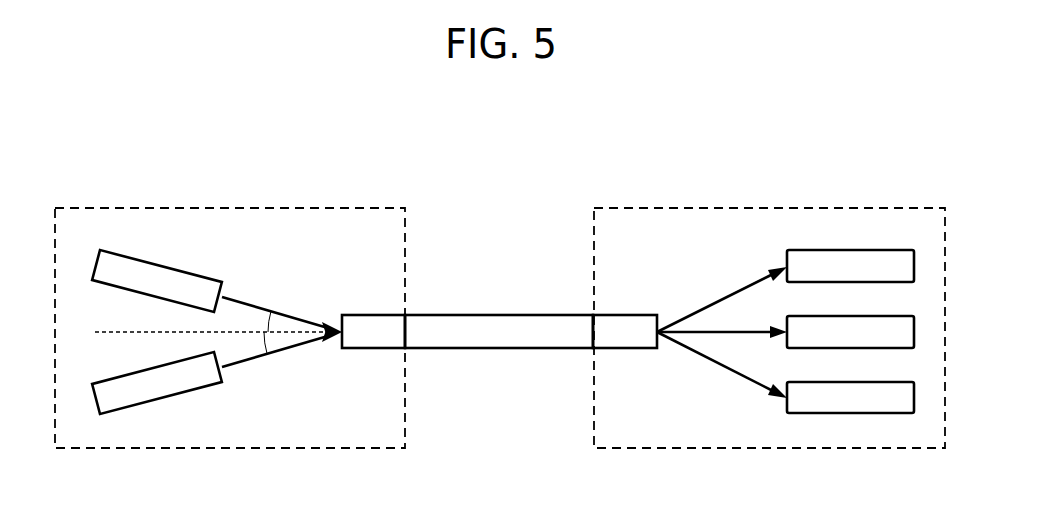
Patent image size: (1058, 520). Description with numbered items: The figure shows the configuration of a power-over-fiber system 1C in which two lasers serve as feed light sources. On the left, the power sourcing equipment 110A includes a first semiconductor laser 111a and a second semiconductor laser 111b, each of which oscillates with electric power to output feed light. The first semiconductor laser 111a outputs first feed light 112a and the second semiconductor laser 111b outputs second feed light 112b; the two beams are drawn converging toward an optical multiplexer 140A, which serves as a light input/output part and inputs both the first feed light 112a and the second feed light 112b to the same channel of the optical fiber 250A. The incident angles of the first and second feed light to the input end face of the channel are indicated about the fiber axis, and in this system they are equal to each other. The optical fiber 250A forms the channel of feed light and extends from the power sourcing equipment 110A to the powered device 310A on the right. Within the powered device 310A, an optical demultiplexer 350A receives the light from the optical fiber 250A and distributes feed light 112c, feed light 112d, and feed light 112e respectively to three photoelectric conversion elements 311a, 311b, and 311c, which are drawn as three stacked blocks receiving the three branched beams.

The power-over-fiber system 1C is at (562, 174).
The power sourcing equipment 110A is at (225, 205).
The first semiconductor laser 111a is at (145, 263).
The second semiconductor laser 111b is at (158, 395).
The first feed light 112a is at (253, 304).
The second feed light 112b is at (250, 361).
The feed light 112c is at (722, 298).
The feed light 112d is at (713, 331).
The feed light 112e is at (712, 370).
The optical multiplexer 140A is at (373, 324).
The optical fiber 250A is at (490, 327).
The optical demultiplexer 350A is at (628, 325).
The powered device 310A is at (782, 207).
The photoelectric conversion element 311a is at (860, 252).
The photoelectric conversion element 311b is at (860, 318).
The photoelectric conversion element 311c is at (860, 384).